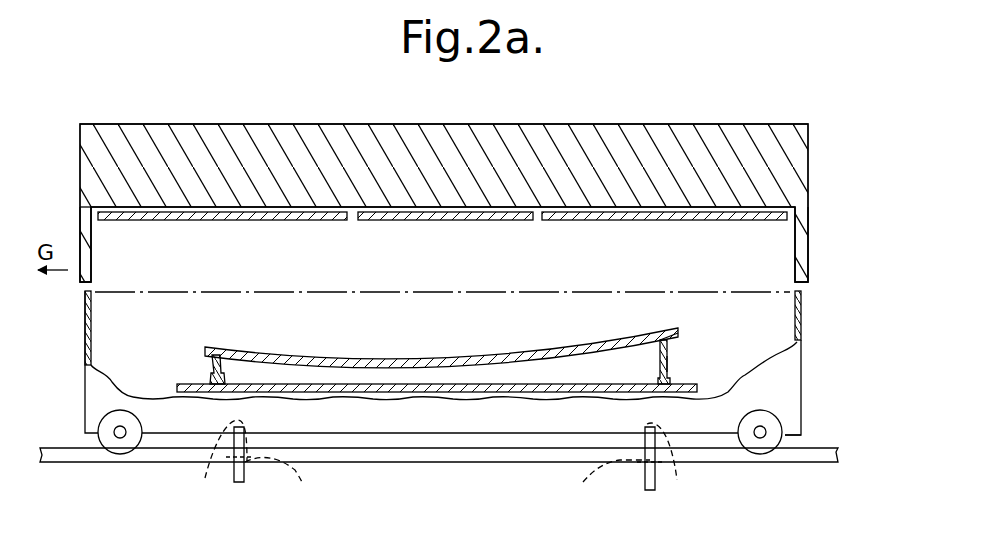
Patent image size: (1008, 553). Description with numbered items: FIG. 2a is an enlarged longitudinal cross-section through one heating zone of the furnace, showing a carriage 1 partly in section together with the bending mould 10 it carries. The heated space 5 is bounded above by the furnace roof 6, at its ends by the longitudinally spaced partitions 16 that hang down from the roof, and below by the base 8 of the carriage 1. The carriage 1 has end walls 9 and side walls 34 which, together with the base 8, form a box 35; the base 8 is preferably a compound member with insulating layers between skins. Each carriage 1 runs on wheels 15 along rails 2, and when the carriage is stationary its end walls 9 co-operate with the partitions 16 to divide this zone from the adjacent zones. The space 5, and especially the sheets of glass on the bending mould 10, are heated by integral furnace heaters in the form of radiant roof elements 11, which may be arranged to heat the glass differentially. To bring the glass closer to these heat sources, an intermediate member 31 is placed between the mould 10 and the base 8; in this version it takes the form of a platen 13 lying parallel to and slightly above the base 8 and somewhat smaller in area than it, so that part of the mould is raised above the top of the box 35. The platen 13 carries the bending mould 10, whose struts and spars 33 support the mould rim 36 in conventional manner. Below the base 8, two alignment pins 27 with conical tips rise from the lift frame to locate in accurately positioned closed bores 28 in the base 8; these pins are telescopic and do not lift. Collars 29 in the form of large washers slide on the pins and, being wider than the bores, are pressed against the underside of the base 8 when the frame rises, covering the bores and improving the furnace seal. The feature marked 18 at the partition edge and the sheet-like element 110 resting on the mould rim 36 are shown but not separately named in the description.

The carriage 1 is at (808, 354).
The rails 2 is at (800, 463).
The space 5 is at (452, 265).
The furnace roof 6 is at (537, 145).
The base 8 is at (790, 430).
The end walls 9 is at (85, 316).
The bending mould 10 is at (686, 350).
The radiant roof elements 11 is at (265, 221).
The platen 13 is at (178, 385).
The wheels 15 is at (110, 428).
The partitions 16 is at (91, 258).
The hood edge 18 is at (80, 226).
The alignment pins 27 is at (240, 476).
The closed bores 28 is at (205, 478).
The collars 29 is at (447, 481).
The intermediate member 31 is at (202, 363).
The struts and spars 33 is at (668, 365).
The side walls 34 is at (772, 368).
The box 35 is at (78, 345).
The mould rim 36 is at (660, 352).
The glass sheet 110 is at (344, 351).